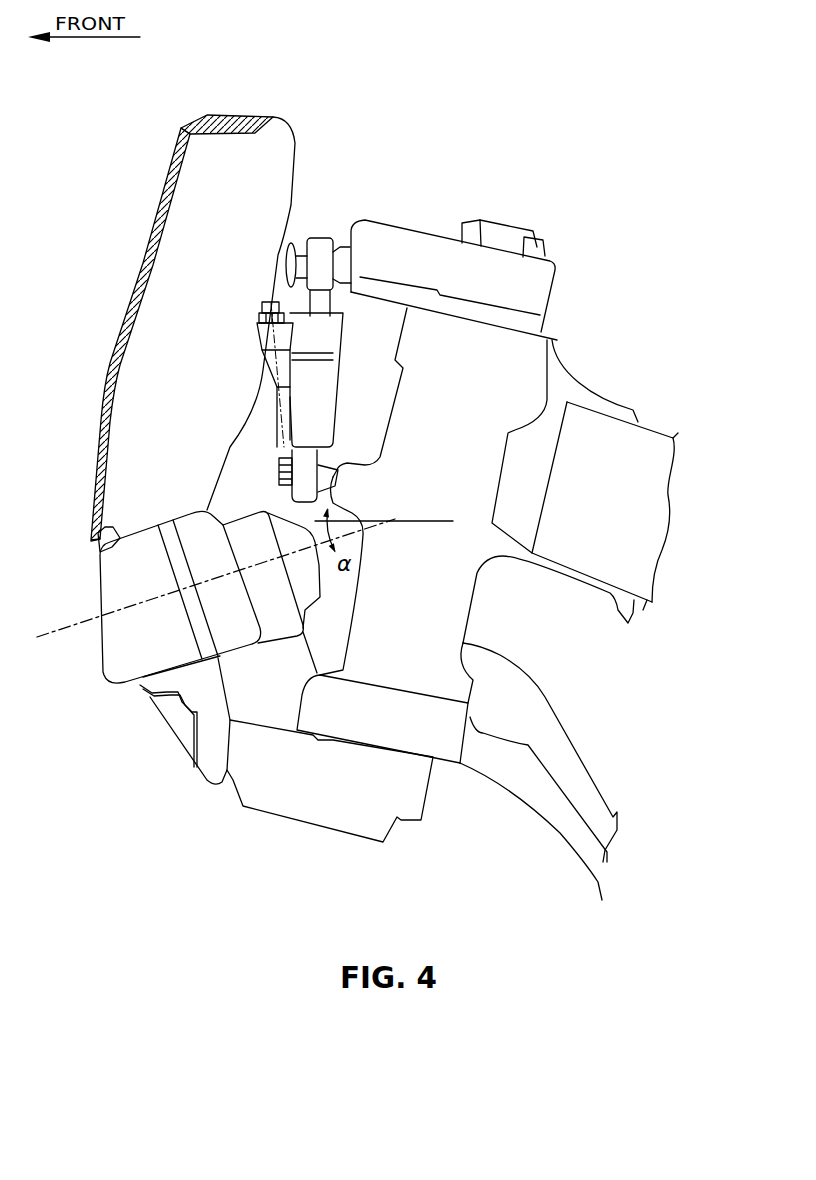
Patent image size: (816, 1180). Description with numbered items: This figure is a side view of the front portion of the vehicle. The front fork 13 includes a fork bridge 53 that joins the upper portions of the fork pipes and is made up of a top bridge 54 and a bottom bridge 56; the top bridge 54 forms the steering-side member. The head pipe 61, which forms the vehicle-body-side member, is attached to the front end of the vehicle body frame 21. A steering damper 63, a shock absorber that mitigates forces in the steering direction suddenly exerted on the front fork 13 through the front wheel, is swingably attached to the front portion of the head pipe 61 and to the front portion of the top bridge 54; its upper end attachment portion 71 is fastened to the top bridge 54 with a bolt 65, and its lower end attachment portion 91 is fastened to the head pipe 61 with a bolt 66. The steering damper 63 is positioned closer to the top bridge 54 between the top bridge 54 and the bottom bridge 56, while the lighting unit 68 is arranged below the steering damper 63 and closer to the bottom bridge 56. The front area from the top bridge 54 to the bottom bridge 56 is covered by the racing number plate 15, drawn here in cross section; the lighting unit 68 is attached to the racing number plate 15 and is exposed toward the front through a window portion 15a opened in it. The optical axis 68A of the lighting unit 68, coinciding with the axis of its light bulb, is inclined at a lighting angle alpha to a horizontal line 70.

The front fork 13 is at (556, 268).
The racing number plate 15 is at (131, 285).
The window portion 15a is at (100, 553).
The vehicle body frame 21 is at (645, 443).
The fork bridge 53 is at (548, 306).
The top bridge 54 is at (422, 243).
The bottom bridge 56 is at (330, 810).
The head pipe 61 is at (490, 402).
The steering damper 63 is at (254, 332).
The bolt 65 is at (283, 247).
The bolt 66 is at (278, 470).
The lighting unit 68 is at (117, 662).
The optical axis 68A is at (53, 633).
The horizontal line 70 is at (440, 522).
The upper end attachment portion 71 is at (320, 247).
The lower end attachment portion 91 is at (310, 458).